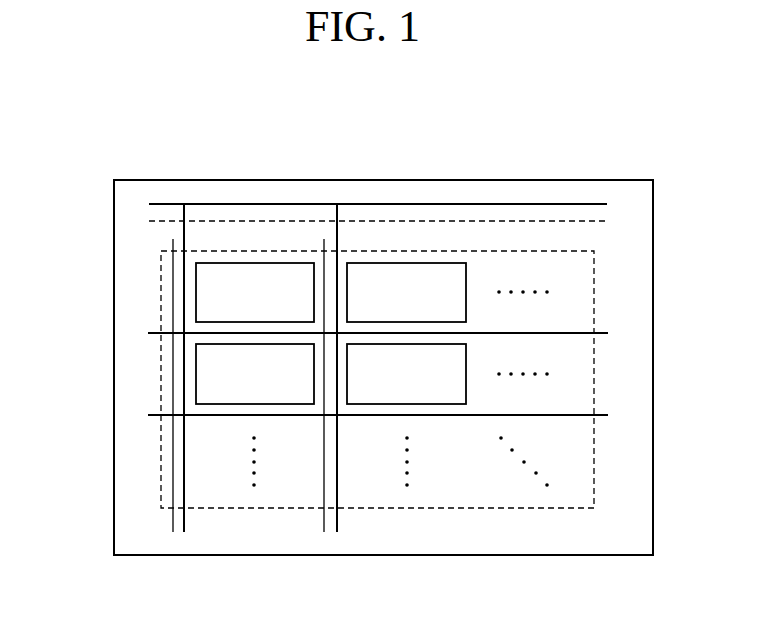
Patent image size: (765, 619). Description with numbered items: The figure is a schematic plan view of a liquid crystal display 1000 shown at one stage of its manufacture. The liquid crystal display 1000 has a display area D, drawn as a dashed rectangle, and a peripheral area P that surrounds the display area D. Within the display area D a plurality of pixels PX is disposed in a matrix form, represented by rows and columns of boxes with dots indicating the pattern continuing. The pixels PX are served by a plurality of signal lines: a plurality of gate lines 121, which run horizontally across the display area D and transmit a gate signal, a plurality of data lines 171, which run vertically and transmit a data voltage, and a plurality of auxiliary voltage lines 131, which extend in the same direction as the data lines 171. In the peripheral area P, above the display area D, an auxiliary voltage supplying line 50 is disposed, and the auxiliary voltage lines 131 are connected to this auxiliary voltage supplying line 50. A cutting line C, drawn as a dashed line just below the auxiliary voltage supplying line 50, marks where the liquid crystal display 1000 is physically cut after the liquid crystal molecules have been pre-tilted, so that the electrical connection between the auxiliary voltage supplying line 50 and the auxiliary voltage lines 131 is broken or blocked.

The liquid crystal display 1000 is at (196, 180).
The peripheral area P is at (628, 264).
The display area D is at (595, 363).
The auxiliary voltage supplying line 50 is at (428, 204).
The cutting line C is at (300, 221).
The auxiliary voltage lines 131 is at (183, 377).
The data lines 171 is at (173, 262).
The gate lines 121 is at (162, 332).
The pixels PX is at (331, 333).